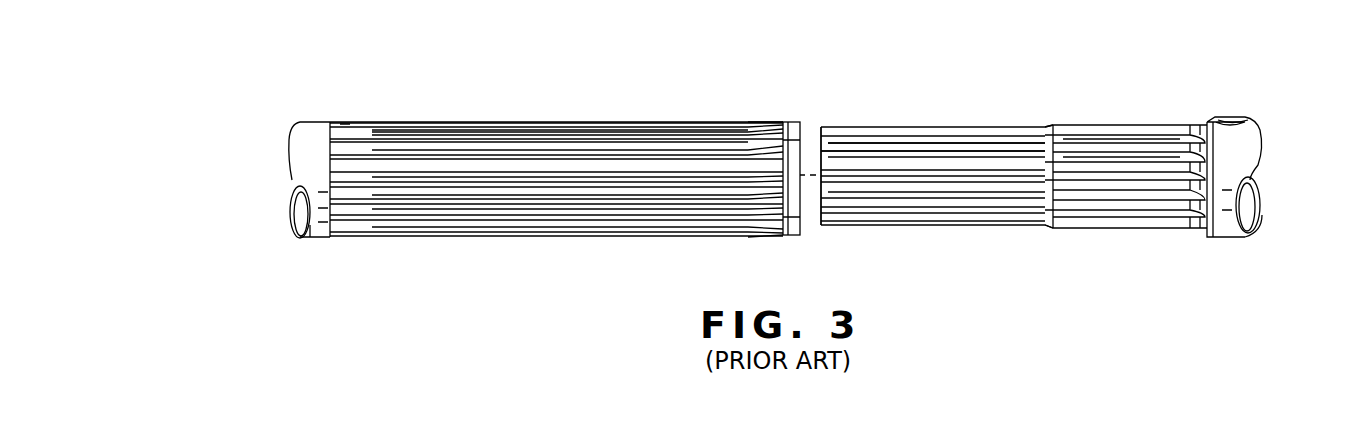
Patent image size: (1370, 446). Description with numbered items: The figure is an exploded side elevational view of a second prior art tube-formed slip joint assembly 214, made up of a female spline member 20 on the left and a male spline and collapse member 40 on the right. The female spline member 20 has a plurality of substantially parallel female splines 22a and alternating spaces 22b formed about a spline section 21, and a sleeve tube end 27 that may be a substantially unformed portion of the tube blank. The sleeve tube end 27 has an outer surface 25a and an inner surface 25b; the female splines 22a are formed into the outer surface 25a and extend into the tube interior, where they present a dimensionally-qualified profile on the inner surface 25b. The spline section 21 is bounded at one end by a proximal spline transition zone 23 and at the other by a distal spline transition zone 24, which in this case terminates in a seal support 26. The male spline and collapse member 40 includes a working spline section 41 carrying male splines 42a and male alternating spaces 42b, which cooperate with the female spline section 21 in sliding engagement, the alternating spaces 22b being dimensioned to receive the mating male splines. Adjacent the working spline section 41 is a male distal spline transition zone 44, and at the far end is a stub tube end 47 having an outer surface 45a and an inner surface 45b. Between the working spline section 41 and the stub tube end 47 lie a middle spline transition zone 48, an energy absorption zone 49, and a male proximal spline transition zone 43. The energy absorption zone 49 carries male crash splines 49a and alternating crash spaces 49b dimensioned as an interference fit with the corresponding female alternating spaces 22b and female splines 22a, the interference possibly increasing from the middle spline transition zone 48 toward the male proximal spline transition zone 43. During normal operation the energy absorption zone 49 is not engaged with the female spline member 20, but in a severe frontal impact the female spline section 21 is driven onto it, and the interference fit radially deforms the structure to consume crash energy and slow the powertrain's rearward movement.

The female spline member 20 is at (515, 105).
The spline section 21 is at (748, 238).
The female splines 22a is at (402, 130).
The alternating spaces 22b is at (442, 140).
The proximal spline transition zone 23 is at (347, 128).
The distal spline transition zone 24 is at (765, 128).
The outer surface 25a is at (323, 222).
The inner surface 25b is at (298, 200).
The seal support 26 is at (790, 125).
The sleeve tube end 27 is at (280, 131).
The male spline and collapse member 40 is at (1020, 108).
The working spline section 41 is at (1045, 238).
The male splines 42a is at (885, 130).
The male alternating spaces 42b is at (965, 130).
The male proximal spline transition zone 43 is at (1195, 235).
The male distal spline transition zone 44 is at (820, 231).
The outer surface 45a is at (1243, 143).
The inner surface 45b is at (1258, 198).
The stub tube end 47 is at (1283, 222).
The middle spline transition zone 48 is at (1052, 232).
The energy absorption zone 49 is at (1185, 238).
The male crash splines 49a is at (1097, 137).
The alternating crash spaces 49b is at (1160, 150).
The second prior art slip joint assembly 214 is at (850, 78).